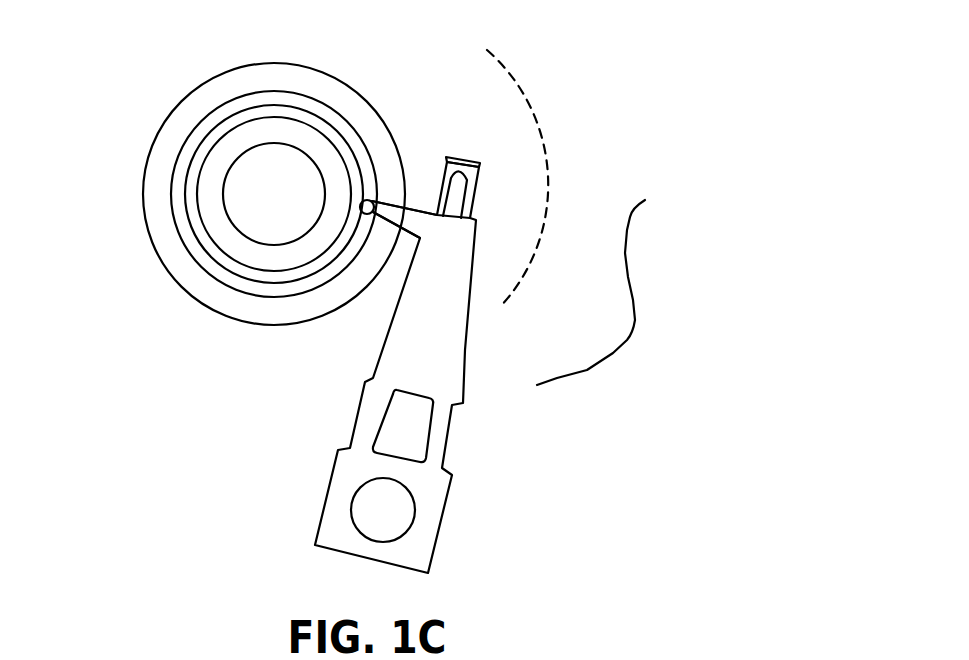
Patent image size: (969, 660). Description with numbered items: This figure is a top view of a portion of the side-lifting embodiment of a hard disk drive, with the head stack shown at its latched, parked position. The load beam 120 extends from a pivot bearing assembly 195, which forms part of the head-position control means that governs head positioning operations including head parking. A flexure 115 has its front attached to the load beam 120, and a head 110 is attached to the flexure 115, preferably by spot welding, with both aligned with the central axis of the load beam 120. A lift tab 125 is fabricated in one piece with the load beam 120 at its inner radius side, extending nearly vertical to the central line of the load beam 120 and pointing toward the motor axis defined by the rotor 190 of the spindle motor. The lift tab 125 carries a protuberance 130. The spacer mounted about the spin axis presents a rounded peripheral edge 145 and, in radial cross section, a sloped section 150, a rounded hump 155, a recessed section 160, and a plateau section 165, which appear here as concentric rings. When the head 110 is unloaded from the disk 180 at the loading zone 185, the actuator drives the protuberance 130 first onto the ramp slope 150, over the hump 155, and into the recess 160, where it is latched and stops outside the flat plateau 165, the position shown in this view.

The head 110 is at (450, 142).
The flexure 115 is at (490, 179).
The load beam 120 is at (375, 334).
The lift tab 125 is at (382, 233).
The protuberance 130 is at (344, 222).
The rounded peripheral edge 145 is at (384, 94).
The sloped section 150 is at (299, 171).
The rounded hump 155 is at (292, 80).
The recessed section 160 is at (247, 95).
The plateau section 165 is at (212, 149).
The disk 180 is at (577, 394).
The loading zone 185 is at (529, 121).
The rotor 190 is at (240, 202).
The pivot bearing assembly 195 is at (440, 509).